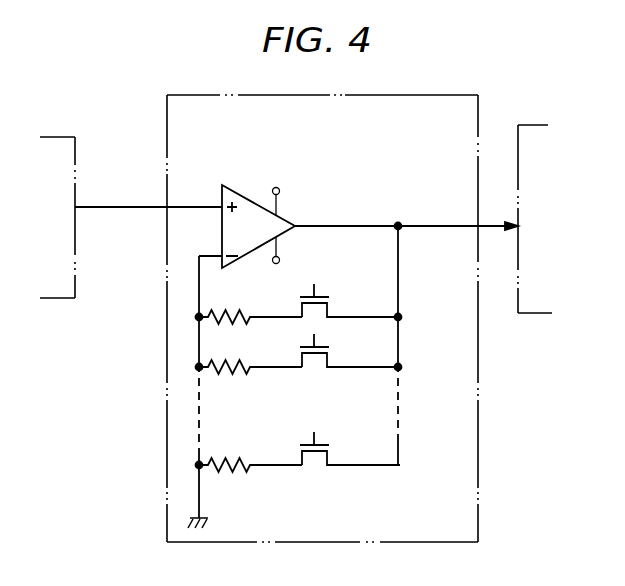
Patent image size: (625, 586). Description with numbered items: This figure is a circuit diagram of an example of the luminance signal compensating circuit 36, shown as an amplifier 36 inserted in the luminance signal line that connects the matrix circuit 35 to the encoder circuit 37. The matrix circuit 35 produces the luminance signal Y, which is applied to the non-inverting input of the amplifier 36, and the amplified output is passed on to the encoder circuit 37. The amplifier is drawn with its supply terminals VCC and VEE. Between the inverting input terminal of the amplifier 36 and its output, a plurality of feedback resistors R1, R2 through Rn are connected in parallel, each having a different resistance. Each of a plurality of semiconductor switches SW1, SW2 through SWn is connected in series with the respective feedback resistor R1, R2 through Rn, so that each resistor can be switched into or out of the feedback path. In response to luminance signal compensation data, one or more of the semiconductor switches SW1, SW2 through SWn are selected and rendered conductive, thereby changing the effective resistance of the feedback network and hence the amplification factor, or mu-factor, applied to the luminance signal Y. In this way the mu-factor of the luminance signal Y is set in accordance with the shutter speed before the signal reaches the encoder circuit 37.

The matrix circuit 35 is at (65, 215).
The luminance signal compensating circuit 36 is at (434, 130).
The encoder circuit 37 is at (563, 228).
The luminance signal Y is at (133, 207).
The feedback resistor R1 is at (222, 313).
The feedback resistor R2 is at (241, 361).
The feedback resistor Rn is at (237, 458).
The semiconductor switch SW1 is at (328, 303).
The semiconductor switch SW2 is at (328, 354).
The semiconductor switch SWn is at (329, 450).
The positive supply terminal VCC is at (277, 188).
The negative supply terminal VEE is at (276, 265).